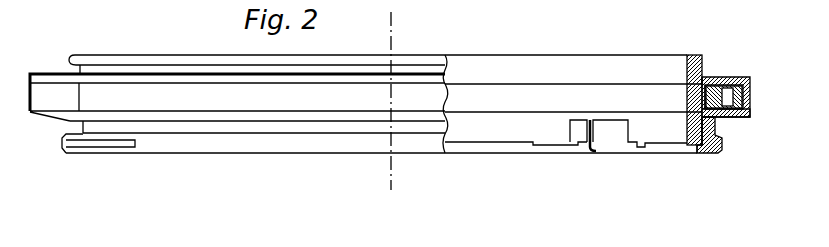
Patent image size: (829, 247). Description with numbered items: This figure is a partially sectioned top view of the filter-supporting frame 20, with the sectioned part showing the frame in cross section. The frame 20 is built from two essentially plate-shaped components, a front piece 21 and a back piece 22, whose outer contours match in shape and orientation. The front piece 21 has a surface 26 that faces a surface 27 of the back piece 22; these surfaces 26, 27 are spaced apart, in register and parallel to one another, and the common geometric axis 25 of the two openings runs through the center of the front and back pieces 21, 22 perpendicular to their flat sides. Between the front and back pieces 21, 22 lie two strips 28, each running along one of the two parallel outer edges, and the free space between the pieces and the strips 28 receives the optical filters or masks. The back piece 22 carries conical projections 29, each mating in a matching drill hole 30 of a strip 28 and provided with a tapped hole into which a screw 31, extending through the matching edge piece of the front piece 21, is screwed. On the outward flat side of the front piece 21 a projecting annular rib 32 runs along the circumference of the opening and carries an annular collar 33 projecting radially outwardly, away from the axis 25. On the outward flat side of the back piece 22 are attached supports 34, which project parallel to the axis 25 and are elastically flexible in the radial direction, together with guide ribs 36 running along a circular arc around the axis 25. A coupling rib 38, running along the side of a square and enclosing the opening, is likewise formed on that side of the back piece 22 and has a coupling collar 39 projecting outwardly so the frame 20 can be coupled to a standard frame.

The filter-supporting frame 20 is at (557, 52).
The front piece 21 is at (45, 73).
The back piece 22 is at (218, 121).
The geometric axis 25 is at (396, 41).
The surface 26 is at (278, 86).
The surface 27 is at (195, 110).
The strip 28 is at (702, 96).
The conical projection 29 is at (722, 120).
The drill hole 30 is at (748, 81).
The screw 31 is at (730, 77).
The annular rib 32 is at (697, 58).
The annular collar 33 is at (705, 67).
The support 34 is at (608, 156).
The guide rib 36 is at (553, 153).
The coupling rib 38 is at (697, 148).
The coupling collar 39 is at (108, 143).